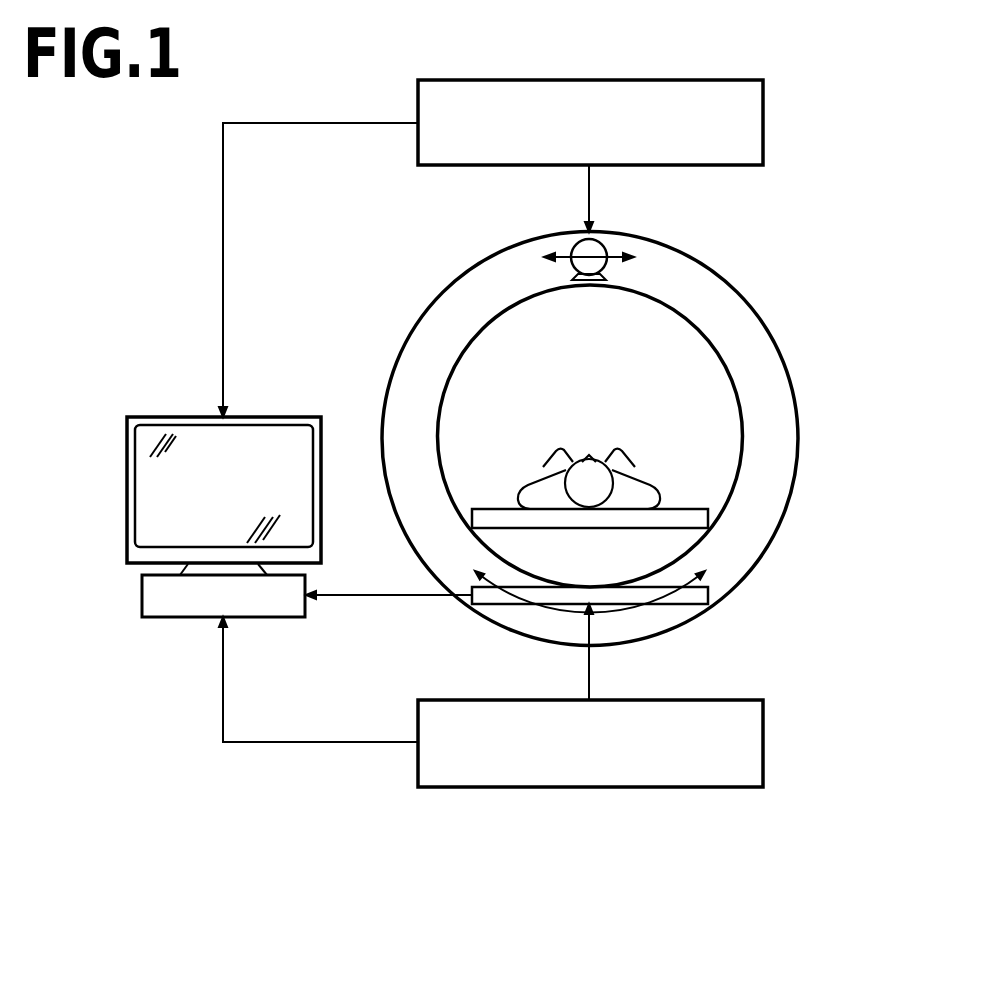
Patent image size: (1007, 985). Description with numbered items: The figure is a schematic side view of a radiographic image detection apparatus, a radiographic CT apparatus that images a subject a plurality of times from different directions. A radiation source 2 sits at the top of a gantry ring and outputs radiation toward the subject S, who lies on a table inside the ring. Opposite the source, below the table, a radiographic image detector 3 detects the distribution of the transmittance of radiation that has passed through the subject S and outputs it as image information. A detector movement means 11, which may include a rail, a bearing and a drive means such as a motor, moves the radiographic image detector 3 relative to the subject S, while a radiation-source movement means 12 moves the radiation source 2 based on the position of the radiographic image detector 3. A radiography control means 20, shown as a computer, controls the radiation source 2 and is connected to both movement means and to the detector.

The radiation-source movement means 12 is at (715, 80).
The radiation source 2 is at (602, 243).
The radiography control means 20 is at (290, 417).
The subject S is at (637, 473).
The radiographic image detector 3 is at (665, 606).
The detector movement means 11 is at (713, 789).